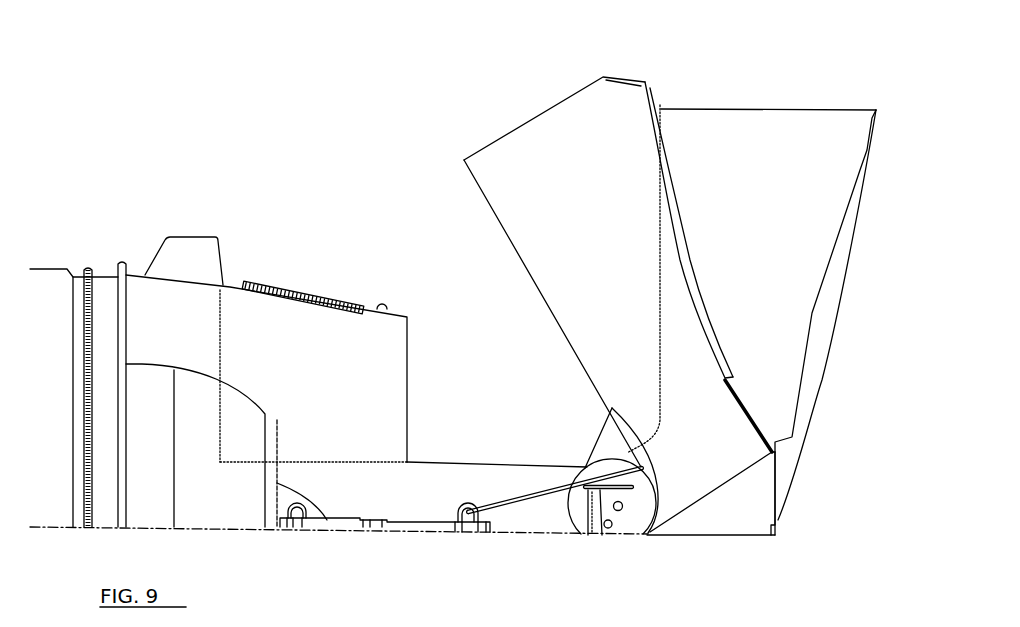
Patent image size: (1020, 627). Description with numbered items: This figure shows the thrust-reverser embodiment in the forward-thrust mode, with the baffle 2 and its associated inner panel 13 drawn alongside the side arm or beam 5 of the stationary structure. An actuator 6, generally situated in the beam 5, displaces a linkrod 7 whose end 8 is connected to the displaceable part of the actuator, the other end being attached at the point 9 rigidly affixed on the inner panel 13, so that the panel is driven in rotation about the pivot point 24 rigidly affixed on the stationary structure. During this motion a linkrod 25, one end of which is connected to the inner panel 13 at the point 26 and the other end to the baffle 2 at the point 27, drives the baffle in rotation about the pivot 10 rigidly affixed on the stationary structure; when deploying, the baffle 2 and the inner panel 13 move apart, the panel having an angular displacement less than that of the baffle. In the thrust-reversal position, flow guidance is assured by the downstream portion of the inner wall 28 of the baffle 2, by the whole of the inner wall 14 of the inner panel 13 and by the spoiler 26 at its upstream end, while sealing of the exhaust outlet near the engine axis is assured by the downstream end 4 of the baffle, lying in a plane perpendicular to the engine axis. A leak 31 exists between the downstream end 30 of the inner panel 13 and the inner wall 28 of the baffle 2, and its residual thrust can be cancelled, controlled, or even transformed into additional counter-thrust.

The baffle 2 is at (818, 352).
The downstream end 4 is at (762, 546).
The beam 5 is at (465, 480).
The actuator 6 is at (350, 527).
The linkrod 7 is at (542, 493).
The end of linkrod 8 is at (465, 520).
The point 9 is at (613, 420).
The pivot 10 is at (618, 512).
The inner panel 13 is at (668, 197).
The inner wall 14 is at (696, 329).
The pivot point 24 is at (608, 530).
The linkrod 25 is at (598, 527).
The point / spoiler 26 is at (618, 84).
The point 27 is at (637, 487).
The inner wall 28 is at (786, 474).
The downstream end 30 is at (722, 500).
The leak 31 is at (772, 432).